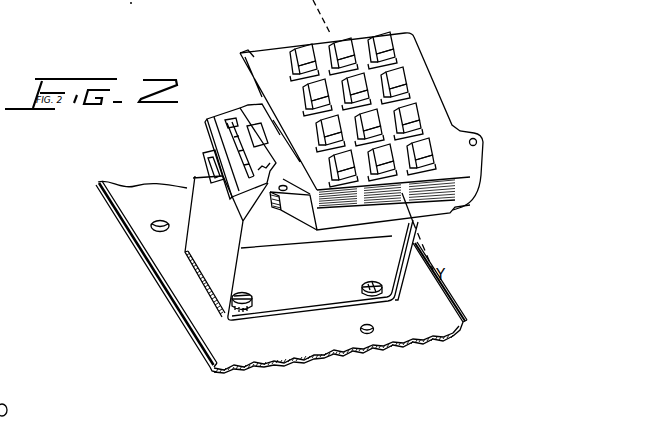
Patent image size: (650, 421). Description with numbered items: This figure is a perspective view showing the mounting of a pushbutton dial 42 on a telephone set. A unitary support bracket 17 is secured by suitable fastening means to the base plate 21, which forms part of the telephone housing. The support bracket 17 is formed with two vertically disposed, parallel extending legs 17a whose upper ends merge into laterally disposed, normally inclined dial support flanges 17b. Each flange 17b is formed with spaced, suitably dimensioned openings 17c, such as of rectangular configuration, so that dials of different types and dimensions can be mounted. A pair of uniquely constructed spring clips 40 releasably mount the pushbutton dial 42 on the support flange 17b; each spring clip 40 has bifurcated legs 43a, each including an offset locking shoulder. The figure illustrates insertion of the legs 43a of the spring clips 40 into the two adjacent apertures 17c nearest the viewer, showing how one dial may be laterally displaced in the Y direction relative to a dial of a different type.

The support bracket 17 is at (289, 248).
The legs 17a is at (378, 232).
The dial support flanges 17b is at (240, 207).
The openings 17c is at (227, 120).
The base plate 21 is at (137, 213).
The spring clips 40 is at (216, 133).
The pushbutton dial 42 is at (430, 92).
The bifurcated legs 43a is at (208, 165).